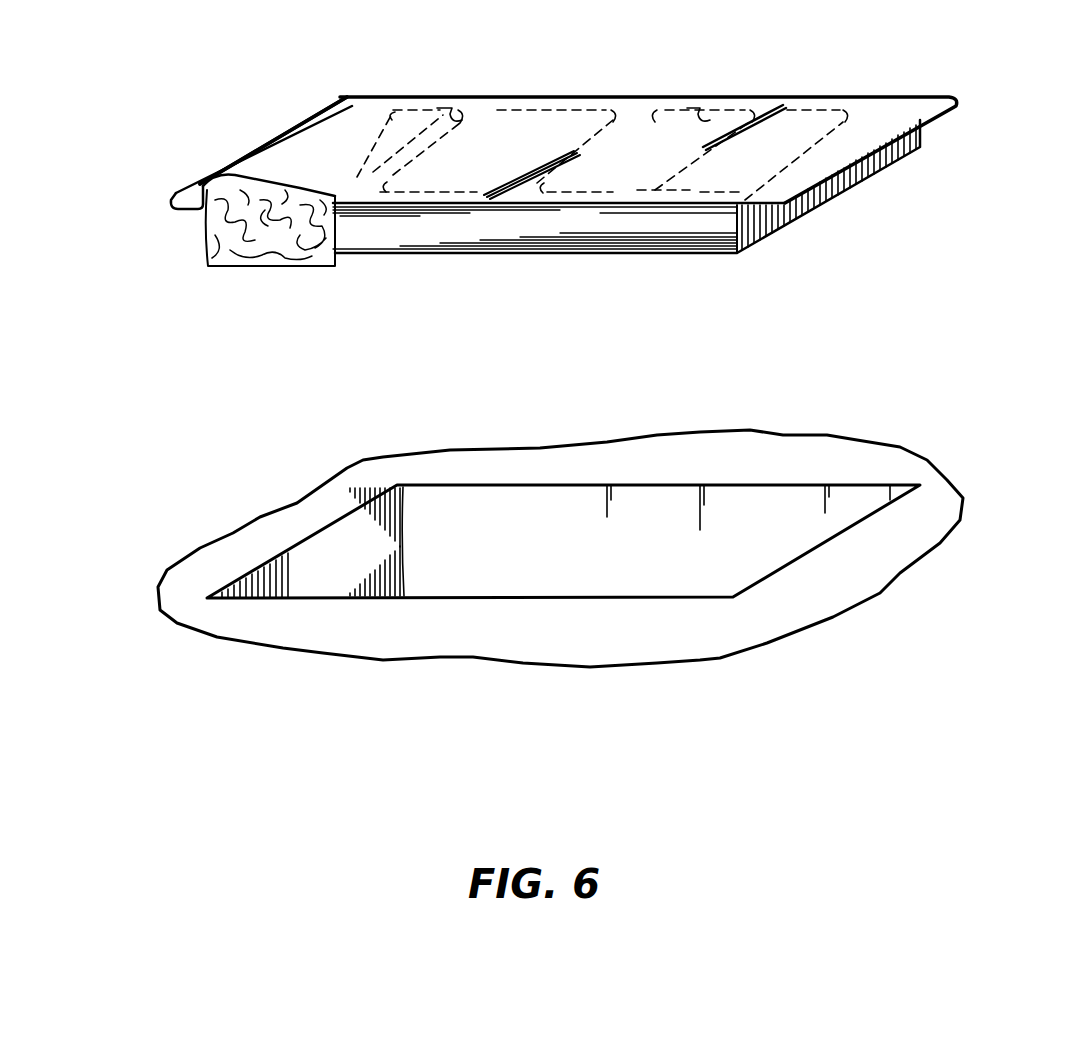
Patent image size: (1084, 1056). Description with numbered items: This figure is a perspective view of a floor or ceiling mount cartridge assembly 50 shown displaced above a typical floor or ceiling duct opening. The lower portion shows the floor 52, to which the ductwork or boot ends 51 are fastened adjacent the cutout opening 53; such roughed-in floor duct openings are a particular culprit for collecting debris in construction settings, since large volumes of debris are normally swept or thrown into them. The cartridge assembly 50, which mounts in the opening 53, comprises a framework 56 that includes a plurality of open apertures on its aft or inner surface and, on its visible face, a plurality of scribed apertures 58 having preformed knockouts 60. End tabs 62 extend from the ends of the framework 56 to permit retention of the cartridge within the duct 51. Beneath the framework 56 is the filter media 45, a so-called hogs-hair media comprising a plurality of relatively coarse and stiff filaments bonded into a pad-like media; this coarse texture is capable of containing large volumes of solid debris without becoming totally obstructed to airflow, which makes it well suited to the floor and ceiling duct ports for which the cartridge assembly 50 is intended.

The media 45 is at (210, 253).
The cartridge assembly 50 is at (233, 150).
The ductwork or boot ends 51 is at (562, 568).
The floor 52 is at (512, 657).
The cutout opening 53 is at (793, 560).
The framework 56 is at (735, 96).
The scribed apertures 58 is at (583, 108).
The preformed knockouts 60 is at (505, 174).
The end tabs 62 is at (171, 211).